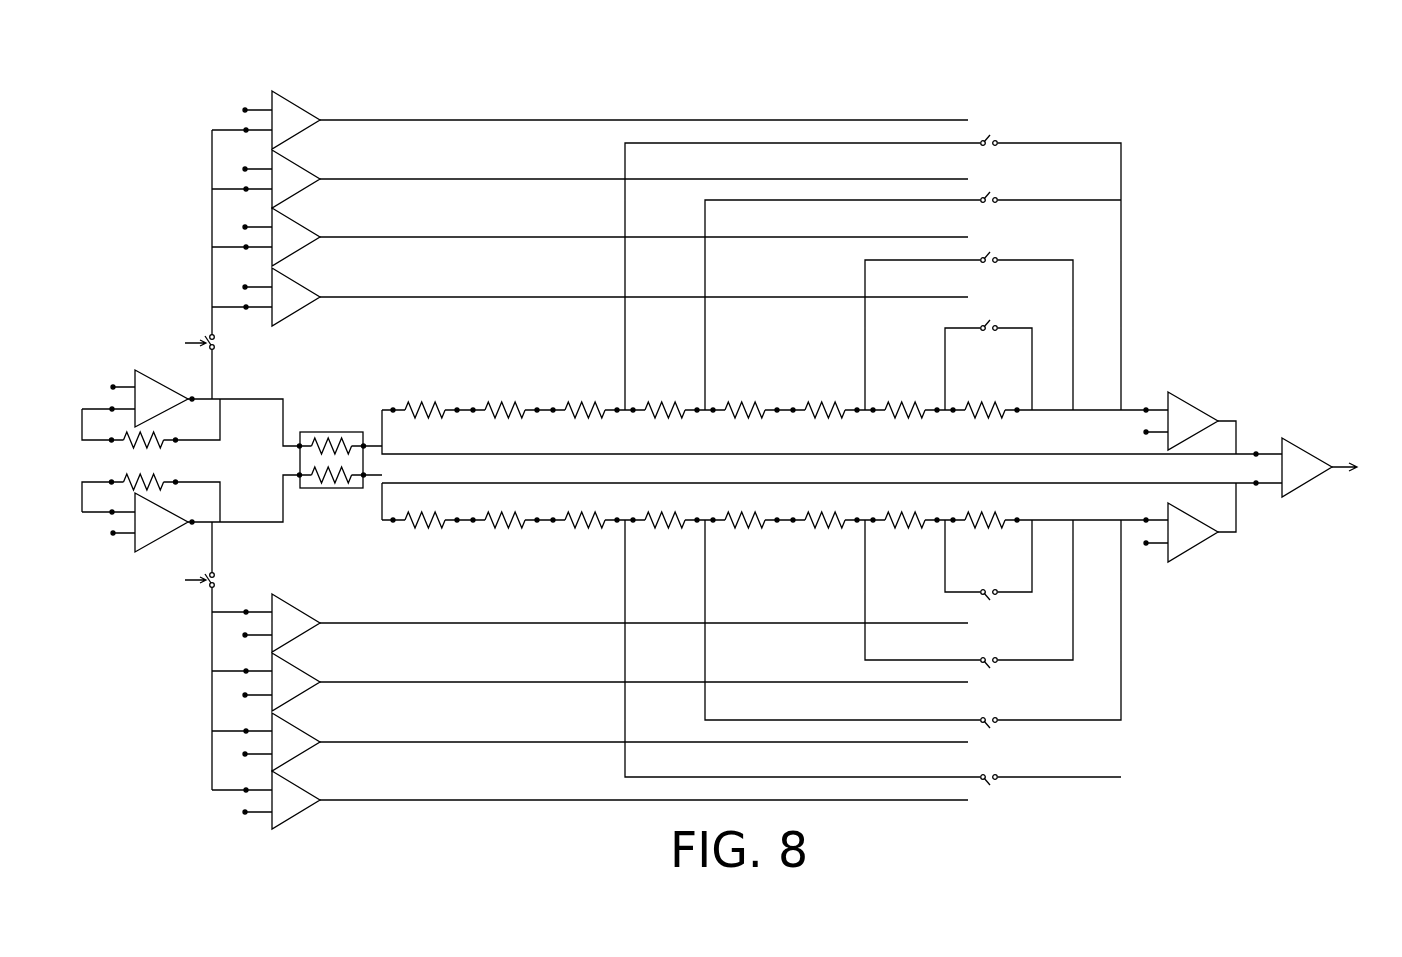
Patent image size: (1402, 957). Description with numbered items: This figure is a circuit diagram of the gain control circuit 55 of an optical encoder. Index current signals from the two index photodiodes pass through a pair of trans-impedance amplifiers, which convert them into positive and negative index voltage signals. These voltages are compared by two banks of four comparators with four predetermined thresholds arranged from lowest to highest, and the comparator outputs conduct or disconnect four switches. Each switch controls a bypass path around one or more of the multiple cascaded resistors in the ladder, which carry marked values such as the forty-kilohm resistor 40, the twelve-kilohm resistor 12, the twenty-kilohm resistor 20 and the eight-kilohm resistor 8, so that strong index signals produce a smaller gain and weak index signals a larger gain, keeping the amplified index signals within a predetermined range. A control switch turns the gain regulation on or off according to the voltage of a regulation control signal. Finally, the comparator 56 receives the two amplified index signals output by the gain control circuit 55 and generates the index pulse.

The gain control circuit 55 is at (120, 83).
The comparator 56 is at (1326, 462).
The 40K resistor 40 is at (425, 427).
The 12K resistor 12 is at (505, 427).
The 20K resistor 20 is at (585, 427).
The 8K resistor 8 is at (745, 427).